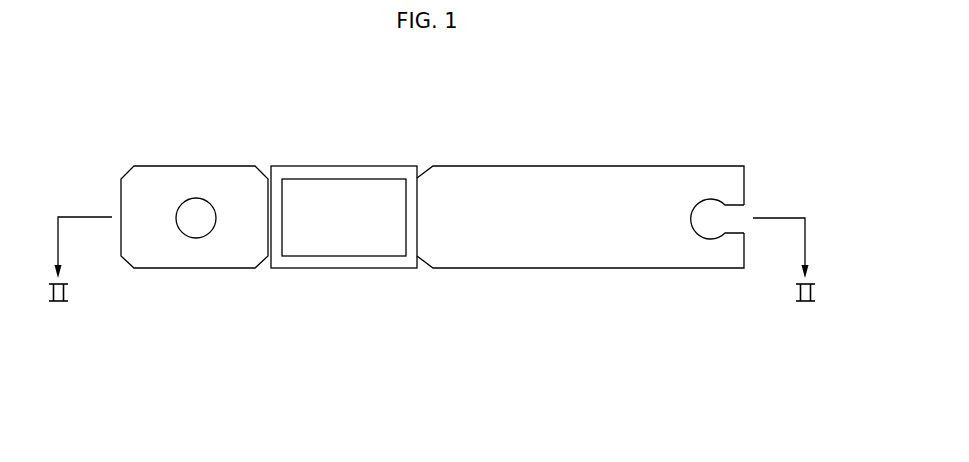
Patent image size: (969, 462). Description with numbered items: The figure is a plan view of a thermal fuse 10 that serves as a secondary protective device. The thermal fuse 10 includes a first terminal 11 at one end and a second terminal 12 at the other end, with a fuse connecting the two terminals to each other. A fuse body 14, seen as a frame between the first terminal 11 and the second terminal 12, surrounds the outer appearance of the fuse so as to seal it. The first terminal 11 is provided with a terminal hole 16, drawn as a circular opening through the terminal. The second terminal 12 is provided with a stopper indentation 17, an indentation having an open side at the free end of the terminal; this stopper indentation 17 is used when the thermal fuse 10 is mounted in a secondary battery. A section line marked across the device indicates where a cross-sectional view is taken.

The thermal fuse 10 is at (108, 104).
The first terminal 11 is at (156, 177).
The second terminal 12 is at (557, 178).
The fuse body 14 is at (339, 185).
The terminal hole 16 is at (197, 203).
The stopper indentation 17 is at (712, 200).